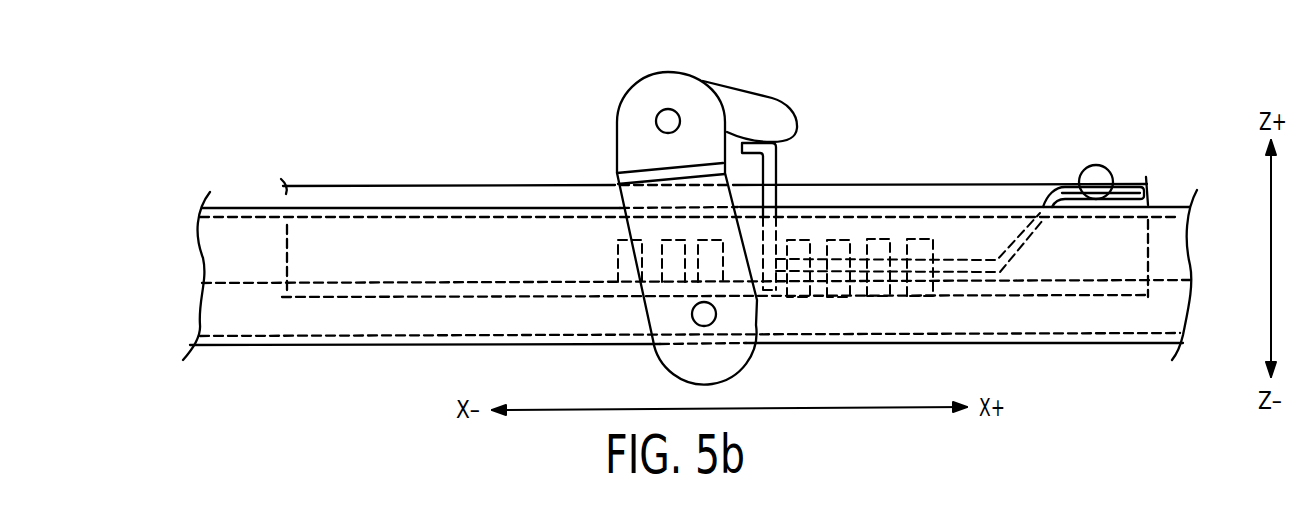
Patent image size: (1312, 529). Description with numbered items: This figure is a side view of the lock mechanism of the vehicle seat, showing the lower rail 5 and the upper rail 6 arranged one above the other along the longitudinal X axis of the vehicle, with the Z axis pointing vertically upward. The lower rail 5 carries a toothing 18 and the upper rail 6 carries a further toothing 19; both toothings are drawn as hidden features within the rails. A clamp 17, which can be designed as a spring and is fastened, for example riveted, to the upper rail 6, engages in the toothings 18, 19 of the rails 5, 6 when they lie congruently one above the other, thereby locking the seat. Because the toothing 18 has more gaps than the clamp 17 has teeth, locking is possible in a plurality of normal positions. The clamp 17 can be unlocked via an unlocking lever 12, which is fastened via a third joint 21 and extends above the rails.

The lower rail 5 is at (325, 332).
The upper rail 6 is at (355, 192).
The unlocking lever 12 is at (747, 102).
The clamp 17 is at (1022, 229).
The toothing 18 is at (817, 297).
The further toothing 19 is at (618, 263).
The third joint 21 is at (668, 120).